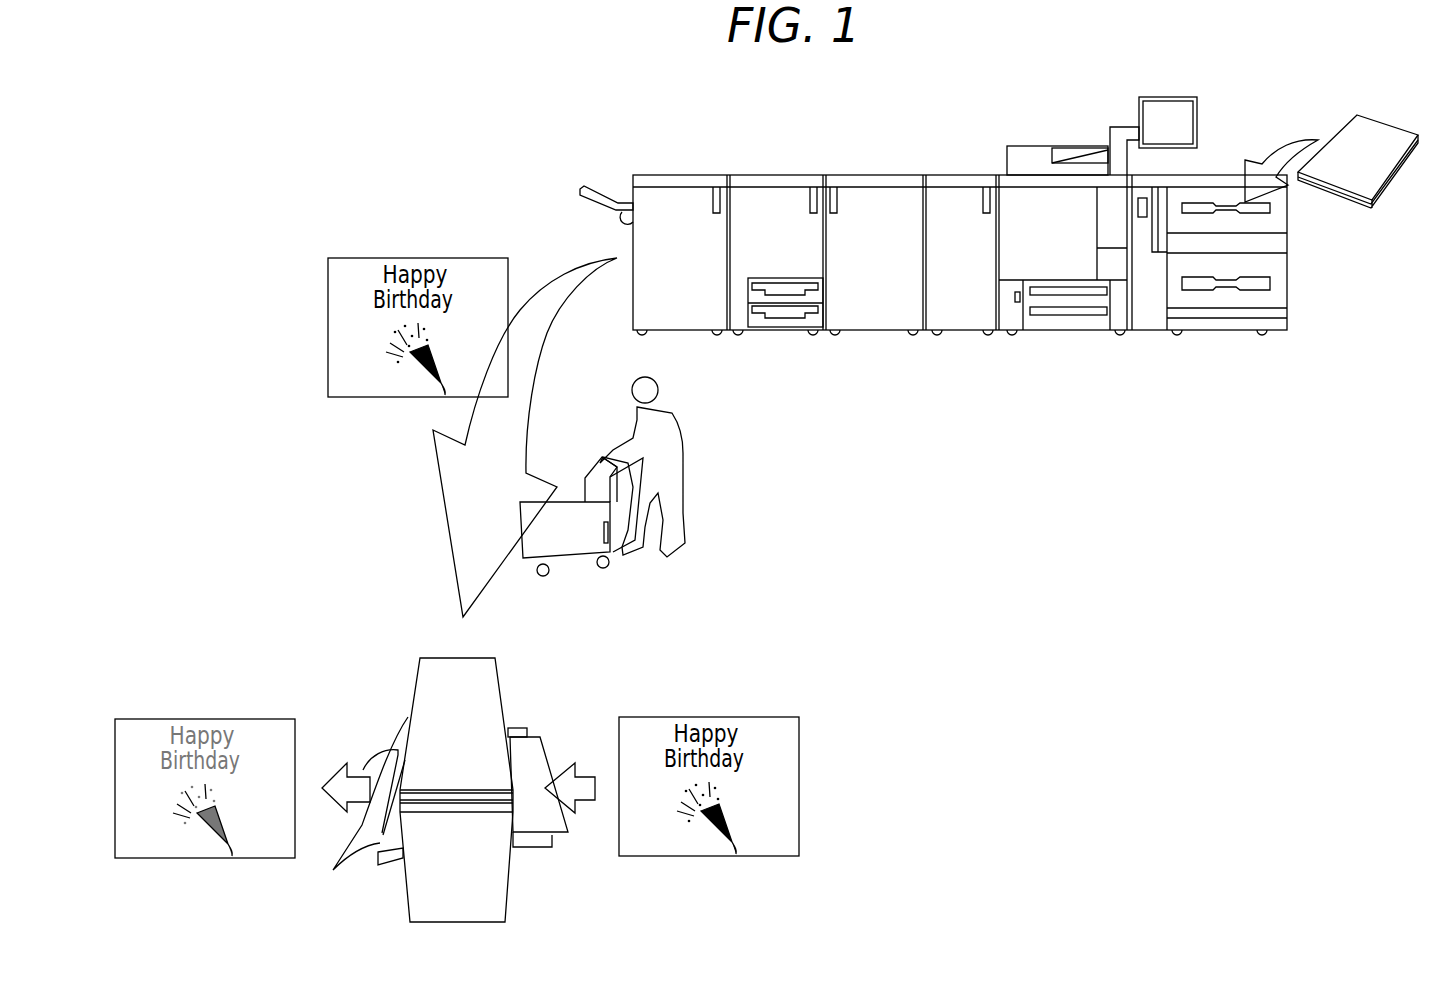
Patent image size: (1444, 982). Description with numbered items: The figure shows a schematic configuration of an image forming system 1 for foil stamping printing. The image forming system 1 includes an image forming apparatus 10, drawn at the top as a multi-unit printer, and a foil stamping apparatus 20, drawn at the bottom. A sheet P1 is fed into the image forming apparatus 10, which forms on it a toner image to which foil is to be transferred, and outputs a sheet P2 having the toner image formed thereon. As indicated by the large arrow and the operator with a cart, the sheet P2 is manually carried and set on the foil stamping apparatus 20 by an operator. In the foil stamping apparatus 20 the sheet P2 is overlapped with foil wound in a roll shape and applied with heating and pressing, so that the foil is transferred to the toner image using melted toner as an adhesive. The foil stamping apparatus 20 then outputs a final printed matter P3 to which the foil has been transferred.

The image forming system 1 is at (346, 88).
The image forming apparatus 10 is at (1215, 99).
The foil stamping apparatus 20 is at (528, 682).
The sheet P1 is at (1382, 122).
The sheet having the toner image formed thereon P2 is at (415, 258).
The final printed matter P3 is at (205, 719).